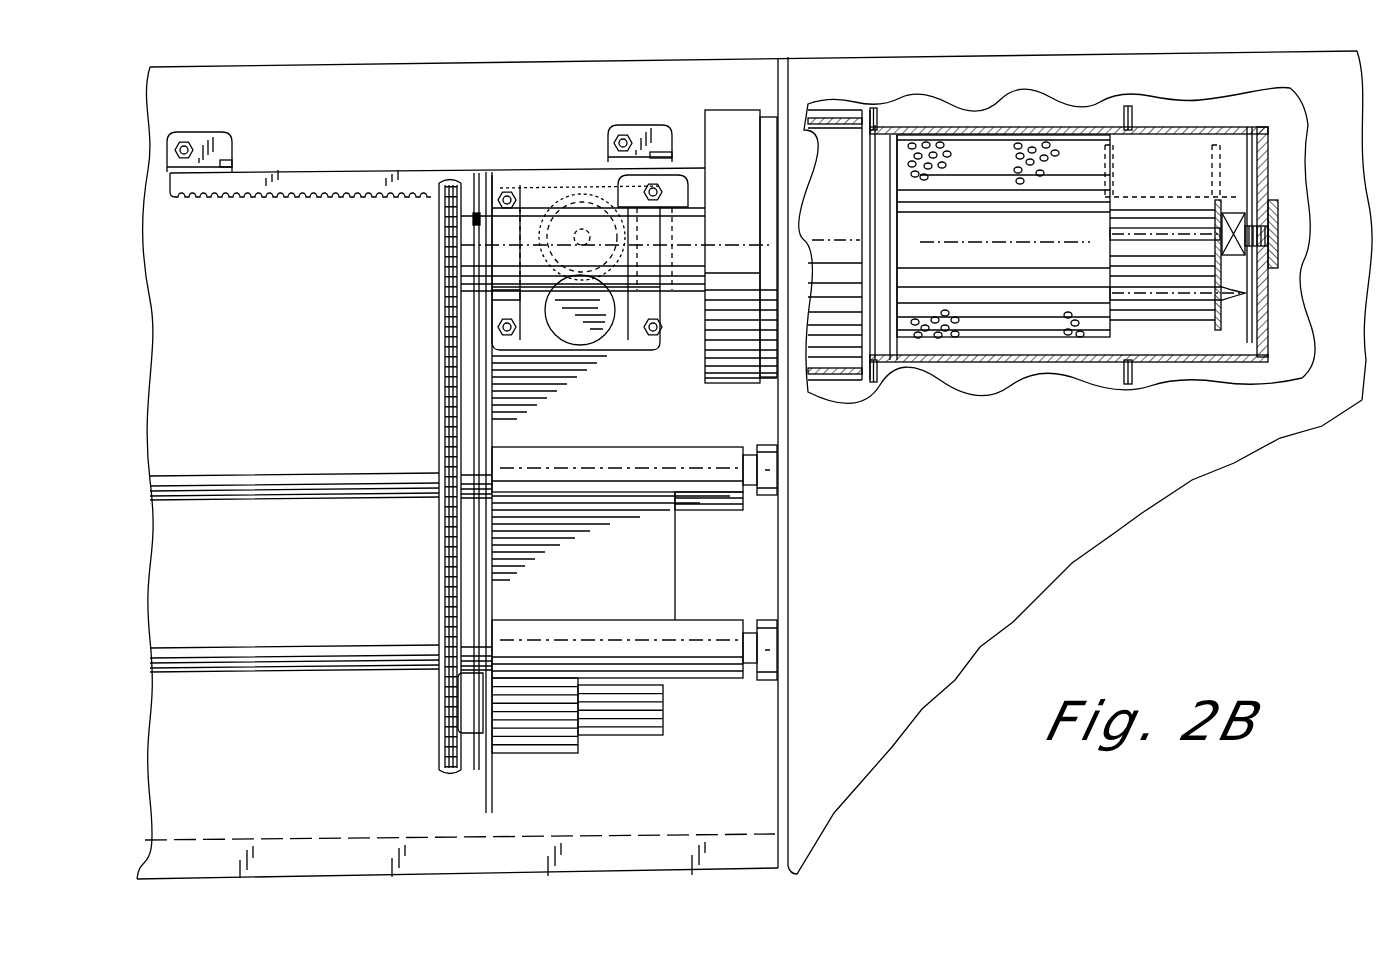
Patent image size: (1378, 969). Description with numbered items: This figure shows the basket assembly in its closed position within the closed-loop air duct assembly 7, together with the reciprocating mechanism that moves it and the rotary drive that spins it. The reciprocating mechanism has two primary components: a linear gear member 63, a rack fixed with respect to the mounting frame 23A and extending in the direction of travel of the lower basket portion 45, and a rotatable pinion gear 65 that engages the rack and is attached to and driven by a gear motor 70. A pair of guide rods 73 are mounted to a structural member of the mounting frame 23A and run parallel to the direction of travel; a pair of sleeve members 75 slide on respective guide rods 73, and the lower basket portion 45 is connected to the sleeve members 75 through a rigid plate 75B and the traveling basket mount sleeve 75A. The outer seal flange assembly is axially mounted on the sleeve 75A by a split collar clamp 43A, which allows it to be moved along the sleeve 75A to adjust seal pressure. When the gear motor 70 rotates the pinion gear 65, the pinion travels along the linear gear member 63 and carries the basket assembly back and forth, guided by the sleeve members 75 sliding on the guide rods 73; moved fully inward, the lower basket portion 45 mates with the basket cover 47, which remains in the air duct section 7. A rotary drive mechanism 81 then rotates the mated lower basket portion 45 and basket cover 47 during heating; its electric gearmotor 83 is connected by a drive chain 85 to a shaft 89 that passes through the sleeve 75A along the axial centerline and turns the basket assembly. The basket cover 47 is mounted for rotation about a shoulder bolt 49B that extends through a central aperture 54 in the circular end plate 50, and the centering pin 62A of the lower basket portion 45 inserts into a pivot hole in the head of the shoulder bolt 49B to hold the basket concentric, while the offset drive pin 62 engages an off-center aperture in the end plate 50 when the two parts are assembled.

The air duct assembly 7 is at (1203, 62).
The mounting frame 23A is at (203, 132).
The split collar clamp 43A is at (688, 290).
The lower basket portion 45 is at (1001, 340).
The basket cover 47 is at (1000, 128).
The shoulder bolt 49B is at (1270, 205).
The circular end plate 50 is at (1250, 128).
The central aperture 54 is at (1278, 222).
The offset drive pin 62 is at (1180, 300).
The centering pin 62A is at (1140, 240).
The linear gear member 63 is at (352, 170).
The pinion gear 65 is at (562, 187).
The gear motor 70 is at (548, 352).
The guide rods 73 is at (265, 474).
The sleeve members 75 is at (693, 510).
The traveling basket mount sleeve 75A is at (500, 290).
The rigid plate 75B is at (523, 494).
The rotary drive mechanism 81 is at (578, 753).
The electric gearmotor 83 is at (655, 735).
The drive chain 85 is at (438, 584).
The shaft 89 is at (475, 212).